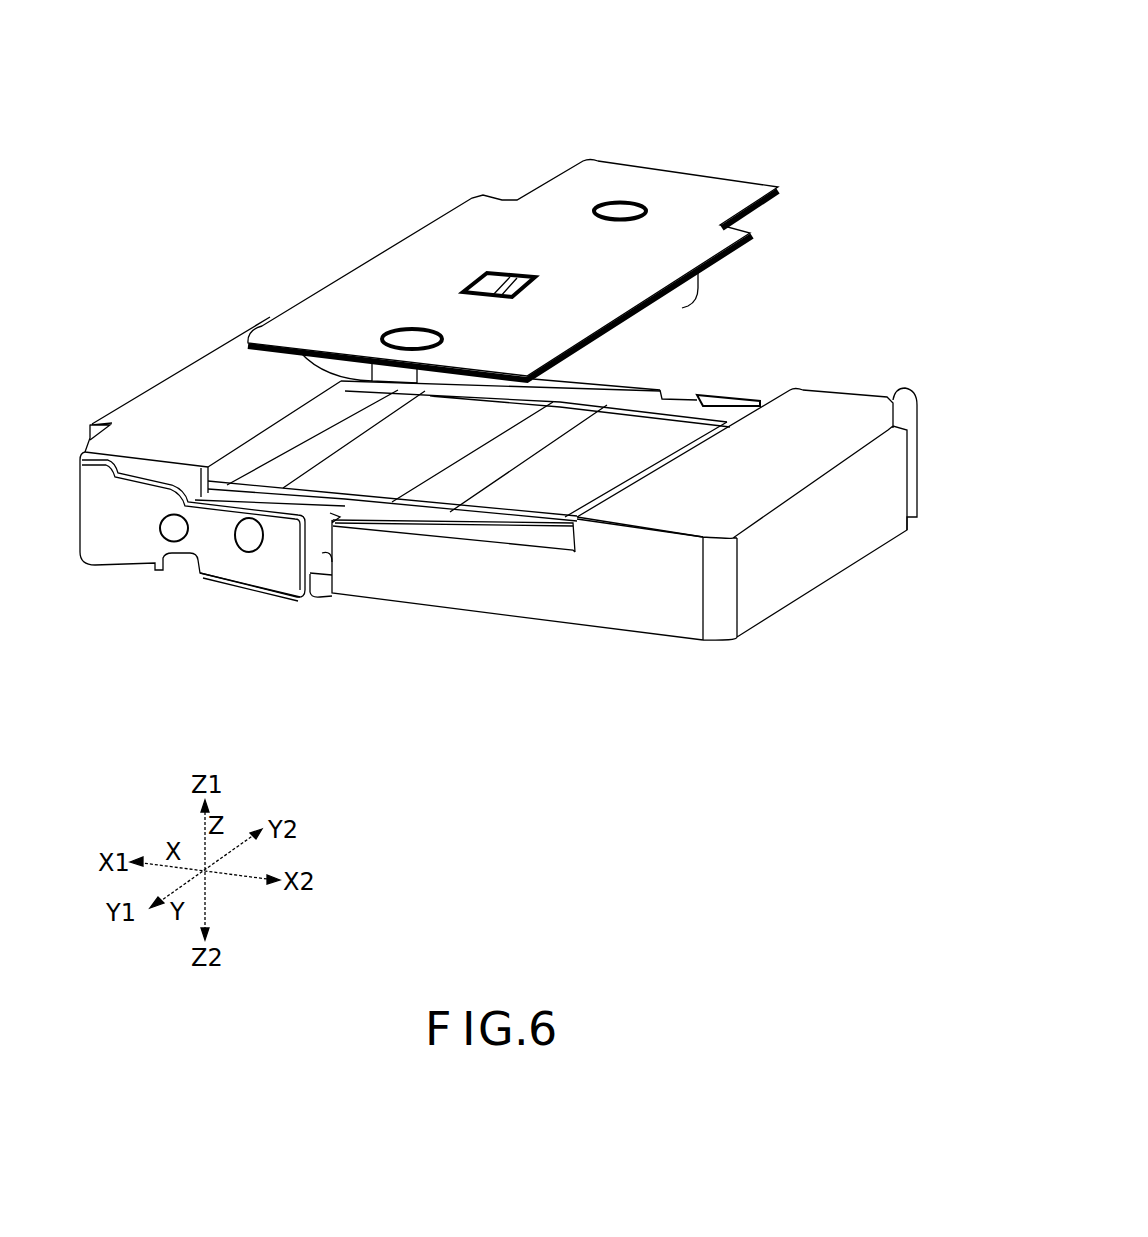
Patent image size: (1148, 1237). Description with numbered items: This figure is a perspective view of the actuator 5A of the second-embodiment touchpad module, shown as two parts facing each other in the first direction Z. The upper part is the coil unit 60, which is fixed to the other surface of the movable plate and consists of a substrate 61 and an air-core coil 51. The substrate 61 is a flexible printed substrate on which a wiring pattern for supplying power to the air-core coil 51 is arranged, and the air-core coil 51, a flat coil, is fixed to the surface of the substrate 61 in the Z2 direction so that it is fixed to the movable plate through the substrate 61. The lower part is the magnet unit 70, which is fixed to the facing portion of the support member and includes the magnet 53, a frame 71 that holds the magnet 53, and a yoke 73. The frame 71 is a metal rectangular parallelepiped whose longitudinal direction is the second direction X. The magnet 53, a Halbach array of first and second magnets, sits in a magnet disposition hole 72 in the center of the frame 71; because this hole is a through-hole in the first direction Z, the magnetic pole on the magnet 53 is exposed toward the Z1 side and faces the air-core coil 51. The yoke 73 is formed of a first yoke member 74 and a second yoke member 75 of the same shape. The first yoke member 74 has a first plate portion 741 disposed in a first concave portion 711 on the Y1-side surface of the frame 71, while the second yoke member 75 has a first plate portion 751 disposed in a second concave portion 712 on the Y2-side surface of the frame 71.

The actuator 5A is at (236, 110).
The coil unit 60 is at (838, 108).
The substrate 61 is at (718, 188).
The air-core coil 51 is at (655, 316).
The magnet unit 70 is at (768, 623).
The frame 71 is at (420, 608).
The first concave portion 711 is at (318, 592).
The second concave portion 712 is at (675, 400).
The magnet disposition hole 72 is at (256, 486).
The yoke 73 is at (492, 486).
The first yoke member 74 is at (192, 552).
The first plate portion 741 is at (130, 540).
The second yoke member 75 is at (801, 363).
The first plate portion 751 is at (752, 398).
The magnet 53 is at (522, 507).